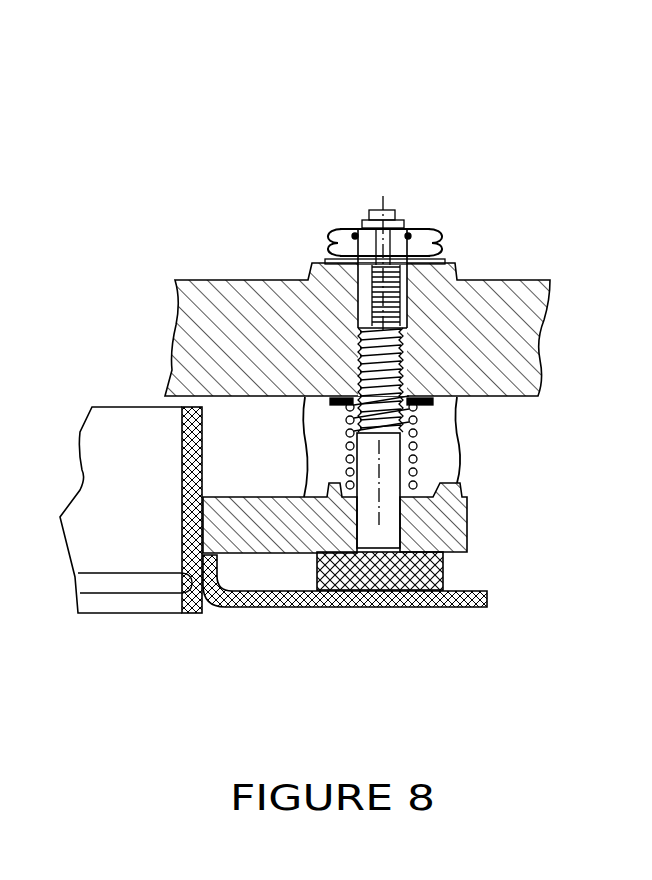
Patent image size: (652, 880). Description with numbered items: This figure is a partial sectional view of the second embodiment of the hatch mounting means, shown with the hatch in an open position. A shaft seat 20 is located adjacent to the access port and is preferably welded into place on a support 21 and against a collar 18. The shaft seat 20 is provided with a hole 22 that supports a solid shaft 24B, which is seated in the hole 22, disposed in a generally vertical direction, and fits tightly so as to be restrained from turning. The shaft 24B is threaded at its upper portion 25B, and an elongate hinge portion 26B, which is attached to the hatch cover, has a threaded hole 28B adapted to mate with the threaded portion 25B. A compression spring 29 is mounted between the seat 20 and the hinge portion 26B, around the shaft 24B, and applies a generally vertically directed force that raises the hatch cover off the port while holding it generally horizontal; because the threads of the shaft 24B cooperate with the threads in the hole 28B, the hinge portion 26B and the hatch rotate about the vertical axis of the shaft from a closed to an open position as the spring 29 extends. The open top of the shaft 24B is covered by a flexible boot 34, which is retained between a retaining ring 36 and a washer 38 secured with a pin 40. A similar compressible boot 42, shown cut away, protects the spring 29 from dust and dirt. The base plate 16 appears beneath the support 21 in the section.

The base plate 16 is at (453, 607).
The collar 18 is at (182, 505).
The shaft seat 20 is at (467, 512).
The support 21 is at (447, 568).
The hole 22 is at (340, 523).
The solid shaft 24B is at (395, 482).
The threaded upper portion 25B is at (425, 350).
The elongate hinge portion 26B is at (200, 277).
The threaded hole 28B is at (410, 302).
The compression spring 29 is at (417, 462).
The boot 34 is at (443, 245).
The retaining ring 36 is at (433, 230).
The washer 38 is at (403, 222).
The pin 40 is at (378, 200).
The boot 42 is at (303, 440).